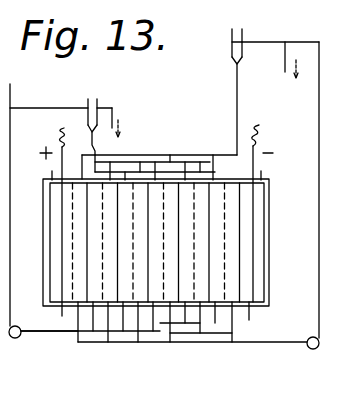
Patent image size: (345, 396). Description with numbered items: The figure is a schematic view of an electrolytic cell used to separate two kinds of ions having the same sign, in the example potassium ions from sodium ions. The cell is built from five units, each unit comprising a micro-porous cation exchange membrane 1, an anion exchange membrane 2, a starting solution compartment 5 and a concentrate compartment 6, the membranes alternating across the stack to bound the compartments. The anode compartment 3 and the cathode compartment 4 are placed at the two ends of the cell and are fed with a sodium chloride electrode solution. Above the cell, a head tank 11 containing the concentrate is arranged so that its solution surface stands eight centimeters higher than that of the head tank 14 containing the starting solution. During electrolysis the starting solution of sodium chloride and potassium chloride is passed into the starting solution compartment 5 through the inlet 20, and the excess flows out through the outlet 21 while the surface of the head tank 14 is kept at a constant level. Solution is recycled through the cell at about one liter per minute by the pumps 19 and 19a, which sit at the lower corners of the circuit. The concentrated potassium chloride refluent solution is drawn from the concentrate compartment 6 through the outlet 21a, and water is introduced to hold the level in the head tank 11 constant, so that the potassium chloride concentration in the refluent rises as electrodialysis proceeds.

The micro-porous cation exchange membrane 1 is at (70, 264).
The anion exchange membrane 2 is at (87, 211).
The anode compartment 3 is at (53, 285).
The cathode compartment 4 is at (257, 279).
The starting solution compartment 5 is at (155, 213).
The concentrate compartment 6 is at (173, 267).
The head tank 11 is at (233, 61).
The head tank 14 is at (94, 110).
The pump 19 is at (20, 337).
The pump 19a is at (308, 348).
The inlet 20 is at (3, 82).
The outlet 21 is at (112, 113).
The outlet 21a is at (285, 73).